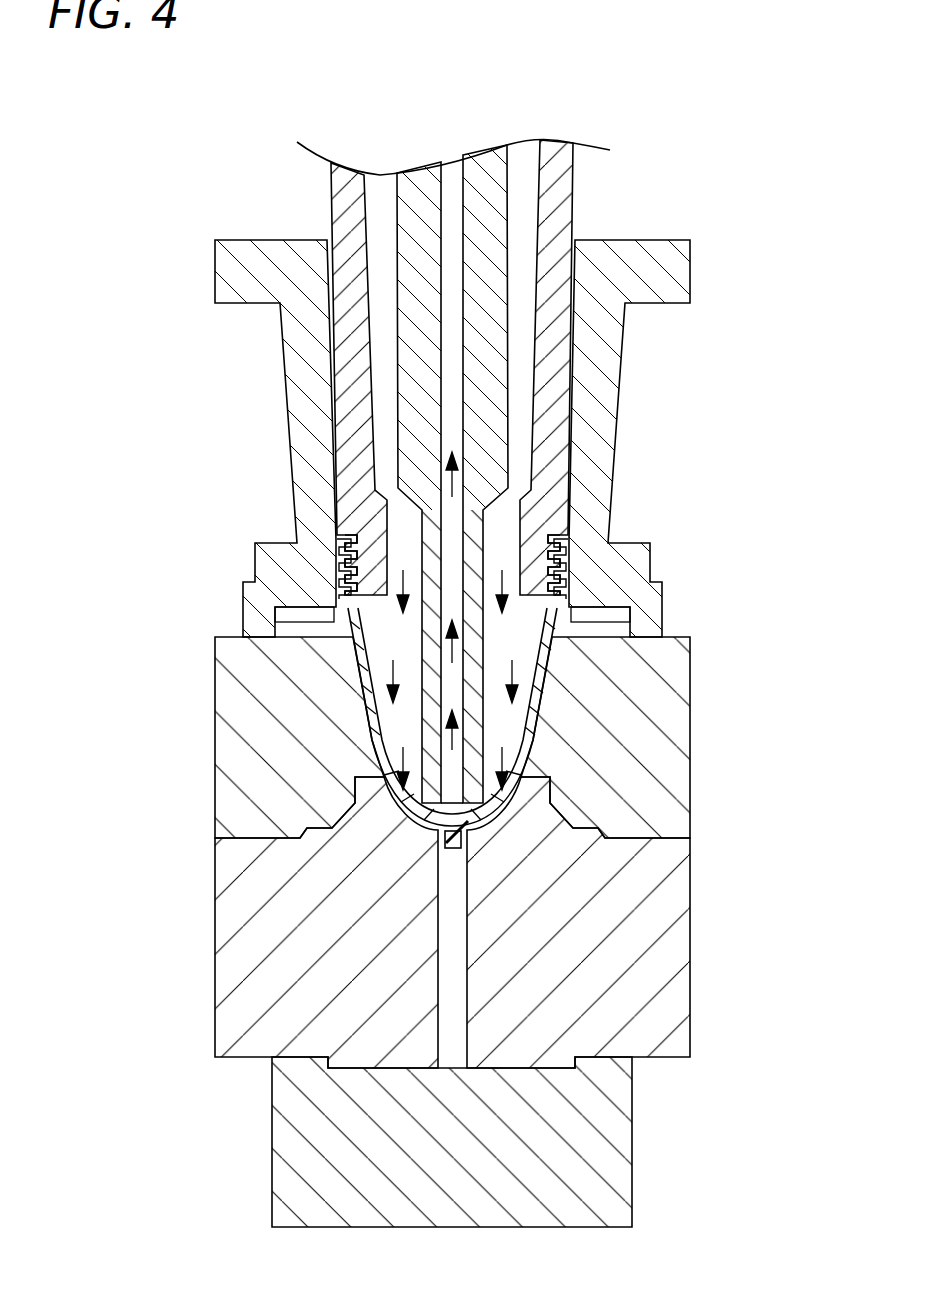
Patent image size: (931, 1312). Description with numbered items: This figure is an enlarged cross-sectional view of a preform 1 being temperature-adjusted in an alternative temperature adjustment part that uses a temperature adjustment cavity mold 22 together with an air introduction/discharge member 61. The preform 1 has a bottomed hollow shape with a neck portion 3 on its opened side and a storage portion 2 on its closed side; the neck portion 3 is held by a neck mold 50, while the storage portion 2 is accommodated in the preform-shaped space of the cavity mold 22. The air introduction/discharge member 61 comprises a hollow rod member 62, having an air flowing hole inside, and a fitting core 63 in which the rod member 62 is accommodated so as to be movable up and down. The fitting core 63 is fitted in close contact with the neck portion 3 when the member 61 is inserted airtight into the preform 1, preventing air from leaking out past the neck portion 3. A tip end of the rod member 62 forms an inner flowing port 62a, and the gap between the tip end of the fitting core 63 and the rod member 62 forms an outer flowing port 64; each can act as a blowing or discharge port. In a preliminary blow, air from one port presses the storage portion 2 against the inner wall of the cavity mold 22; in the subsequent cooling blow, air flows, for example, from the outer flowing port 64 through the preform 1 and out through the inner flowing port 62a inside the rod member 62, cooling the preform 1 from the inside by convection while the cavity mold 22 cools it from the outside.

The preform 1 is at (570, 640).
The storage portion 2 is at (556, 666).
The neck portion 3 is at (563, 547).
The temperature adjustment cavity mold 22 is at (702, 774).
The neck mold 50 is at (285, 353).
The air introduction/discharge member 61 is at (548, 471).
The rod member 62 is at (500, 175).
The inner flowing port 62a is at (417, 817).
The fitting core 63 is at (563, 218).
The outer flowing port 64 is at (397, 607).